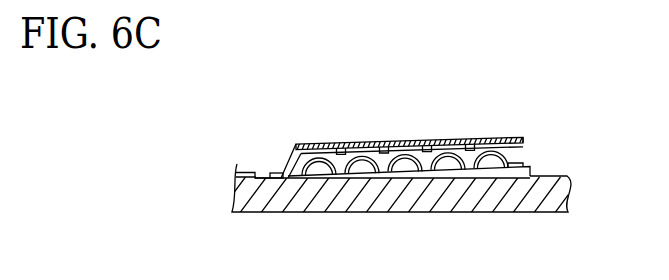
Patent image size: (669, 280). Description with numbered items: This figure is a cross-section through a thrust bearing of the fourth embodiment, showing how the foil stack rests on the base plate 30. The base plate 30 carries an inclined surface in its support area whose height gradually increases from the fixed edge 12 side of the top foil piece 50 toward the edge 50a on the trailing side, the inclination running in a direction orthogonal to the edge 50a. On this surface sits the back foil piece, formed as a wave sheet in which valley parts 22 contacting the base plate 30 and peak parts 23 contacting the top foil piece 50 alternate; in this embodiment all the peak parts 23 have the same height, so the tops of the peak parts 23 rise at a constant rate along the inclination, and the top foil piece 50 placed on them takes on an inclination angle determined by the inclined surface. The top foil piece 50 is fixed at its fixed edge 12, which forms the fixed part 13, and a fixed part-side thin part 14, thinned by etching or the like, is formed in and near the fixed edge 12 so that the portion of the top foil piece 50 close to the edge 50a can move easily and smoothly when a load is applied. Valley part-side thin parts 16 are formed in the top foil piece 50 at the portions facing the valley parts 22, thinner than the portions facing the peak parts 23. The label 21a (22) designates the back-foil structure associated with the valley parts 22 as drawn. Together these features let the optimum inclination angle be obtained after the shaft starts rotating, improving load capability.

The fixed edge 12 is at (275, 173).
The fixed part 13 is at (257, 160).
The fixed part-side thin part 14 is at (291, 179).
The valley part-side thin part 16 is at (344, 154).
The insulating layer on substrate 21a is at (520, 157).
The valley part 22 is at (352, 173).
The peak part 23 is at (318, 158).
The base plate 30 is at (554, 197).
The top foil piece 50 is at (435, 141).
The edge 50a is at (523, 139).